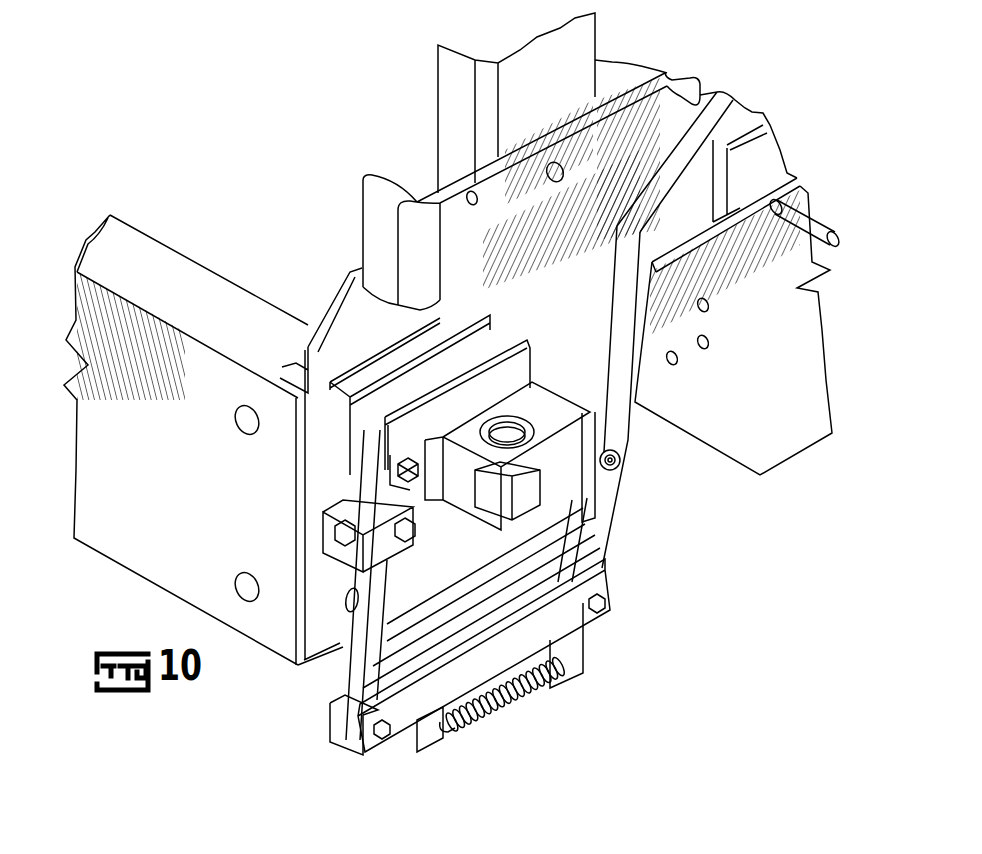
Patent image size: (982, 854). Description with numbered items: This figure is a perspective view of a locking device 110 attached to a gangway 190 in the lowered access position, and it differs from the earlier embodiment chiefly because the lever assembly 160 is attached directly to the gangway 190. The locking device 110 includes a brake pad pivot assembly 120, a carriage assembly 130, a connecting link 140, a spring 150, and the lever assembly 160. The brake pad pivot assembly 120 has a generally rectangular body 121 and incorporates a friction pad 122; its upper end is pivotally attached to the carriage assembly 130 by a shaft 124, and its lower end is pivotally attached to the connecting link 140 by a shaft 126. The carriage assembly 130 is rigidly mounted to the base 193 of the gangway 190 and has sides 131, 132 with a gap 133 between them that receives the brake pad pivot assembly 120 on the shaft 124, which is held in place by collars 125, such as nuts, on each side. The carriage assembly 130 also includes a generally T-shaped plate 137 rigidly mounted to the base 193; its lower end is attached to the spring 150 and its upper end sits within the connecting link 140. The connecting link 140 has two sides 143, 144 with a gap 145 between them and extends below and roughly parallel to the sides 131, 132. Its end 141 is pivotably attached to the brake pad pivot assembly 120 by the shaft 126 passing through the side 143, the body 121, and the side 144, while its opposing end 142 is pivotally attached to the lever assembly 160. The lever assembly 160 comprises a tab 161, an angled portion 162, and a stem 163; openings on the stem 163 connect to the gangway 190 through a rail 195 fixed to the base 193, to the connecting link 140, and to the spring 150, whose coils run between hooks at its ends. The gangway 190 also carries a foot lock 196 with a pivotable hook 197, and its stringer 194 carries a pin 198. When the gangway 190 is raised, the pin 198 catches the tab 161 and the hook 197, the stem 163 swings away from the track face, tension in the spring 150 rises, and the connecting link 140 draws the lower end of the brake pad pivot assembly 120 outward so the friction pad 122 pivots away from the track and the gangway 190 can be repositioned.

The locking device 110 is at (640, 575).
The brake pad pivot assembly 120 is at (357, 629).
The body 121 is at (342, 684).
The friction pad 122 is at (326, 546).
The shaft 124 is at (397, 468).
The collars 125 is at (400, 489).
The shaft 126 is at (380, 746).
The carriage assembly 130 is at (621, 452).
The side 131 is at (532, 356).
The side 132 is at (493, 340).
The gap 133 is at (413, 382).
The plate 137 is at (297, 665).
The connecting link 140 is at (396, 716).
The end 141 is at (352, 748).
The opposing end 142 is at (606, 586).
The side 143 is at (560, 632).
The side 144 is at (495, 612).
The gap 145 is at (452, 626).
The spring 150 is at (527, 695).
The lever assembly 160 is at (586, 558).
The tab 161 is at (742, 123).
The angled portion 162 is at (672, 186).
The stem 163 is at (604, 510).
The gangway 190 is at (76, 332).
The base 193 is at (312, 446).
The stringer 194 is at (717, 422).
The rail 195 is at (566, 58).
The foot lock 196 is at (645, 115).
The hook 197 is at (697, 92).
The pin 198 is at (822, 232).